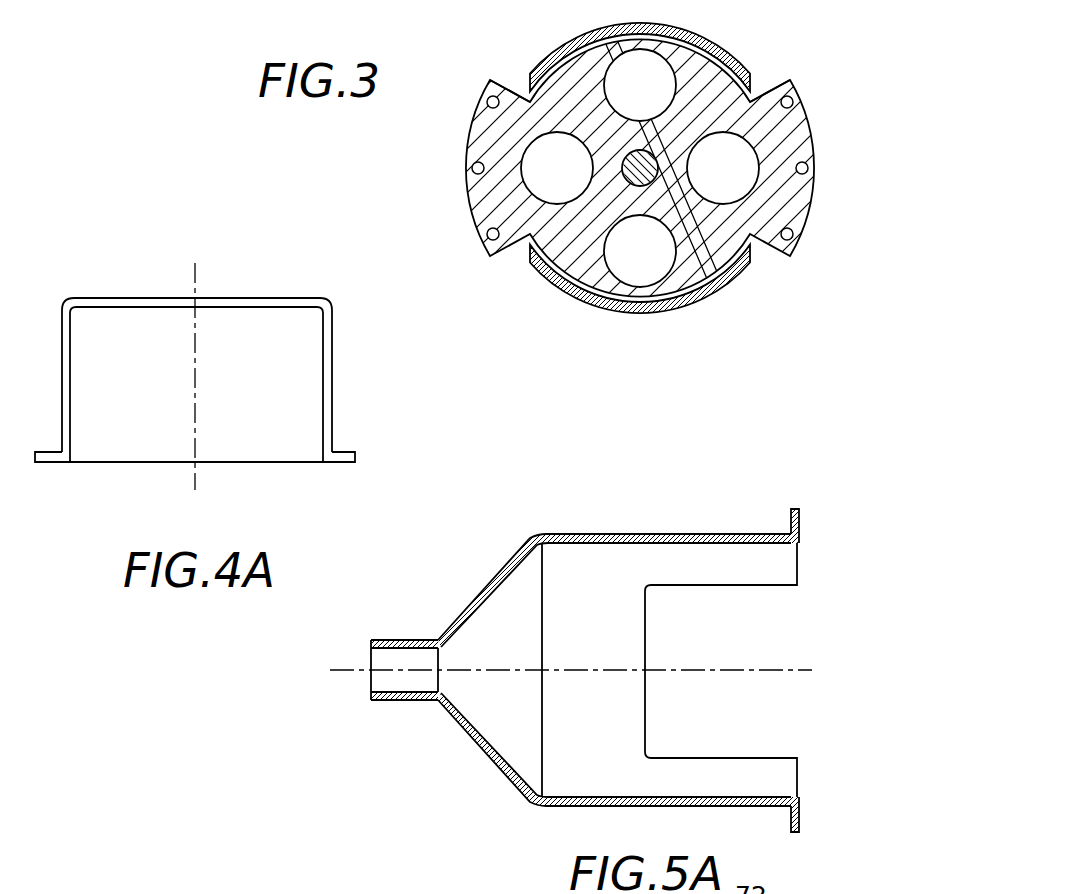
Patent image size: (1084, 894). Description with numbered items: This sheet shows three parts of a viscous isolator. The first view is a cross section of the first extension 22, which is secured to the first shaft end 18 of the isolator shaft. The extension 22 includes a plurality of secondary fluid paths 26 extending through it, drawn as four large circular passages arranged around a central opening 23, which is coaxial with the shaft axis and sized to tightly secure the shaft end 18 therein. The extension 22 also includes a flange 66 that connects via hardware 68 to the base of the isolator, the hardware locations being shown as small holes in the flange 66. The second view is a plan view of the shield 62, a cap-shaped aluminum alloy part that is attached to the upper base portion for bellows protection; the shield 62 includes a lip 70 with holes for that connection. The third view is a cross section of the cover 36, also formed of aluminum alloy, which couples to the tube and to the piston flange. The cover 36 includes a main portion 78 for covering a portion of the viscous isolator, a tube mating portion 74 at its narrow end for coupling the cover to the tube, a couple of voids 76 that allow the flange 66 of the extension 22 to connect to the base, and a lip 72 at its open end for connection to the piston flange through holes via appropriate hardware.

In FIG. 3, the first shaft end 18 is at (733, 82).
In FIG. 3, the first extension 22 is at (690, 37).
In FIG. 3, the opening 23 is at (722, 268).
In FIG. 3, the secondary fluid paths 26 is at (640, 87).
In FIG. 3, the cover 36 is at (675, 310).
In FIG. 5A, the cover 36 is at (559, 513).
In FIG. 4A, the shield 62 is at (302, 296).
In FIG. 3, the flange 66 is at (470, 135).
In FIG. 3, the hardware 68 is at (488, 100).
In FIG. 4A, the lip 70 is at (338, 463).
In FIG. 5A, the lip 72 is at (797, 526).
In FIG. 5A, the tube mating portion 74 is at (413, 638).
In FIG. 5A, the voids 76 is at (734, 661).
In FIG. 5A, the main portion 78 is at (696, 534).